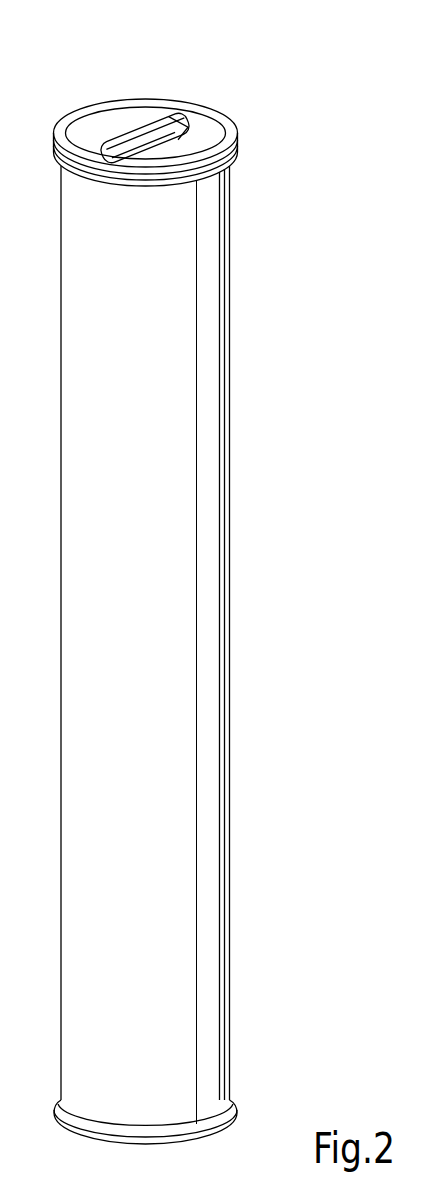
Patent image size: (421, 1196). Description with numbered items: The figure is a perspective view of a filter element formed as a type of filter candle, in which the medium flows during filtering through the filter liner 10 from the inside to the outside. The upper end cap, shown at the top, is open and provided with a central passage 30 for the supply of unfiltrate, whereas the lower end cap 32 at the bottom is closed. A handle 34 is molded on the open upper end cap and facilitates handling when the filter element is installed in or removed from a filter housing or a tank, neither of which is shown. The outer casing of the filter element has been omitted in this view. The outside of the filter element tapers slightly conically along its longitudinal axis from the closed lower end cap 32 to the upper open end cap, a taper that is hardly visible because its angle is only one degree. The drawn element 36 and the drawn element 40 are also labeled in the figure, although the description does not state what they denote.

The container tube 10 is at (97, 330).
The lid 30 is at (188, 170).
The bottom rim 32 is at (212, 1137).
The pull tab 34 is at (150, 125).
The lid rim 36 is at (232, 132).
The side wall seam 40 is at (231, 574).